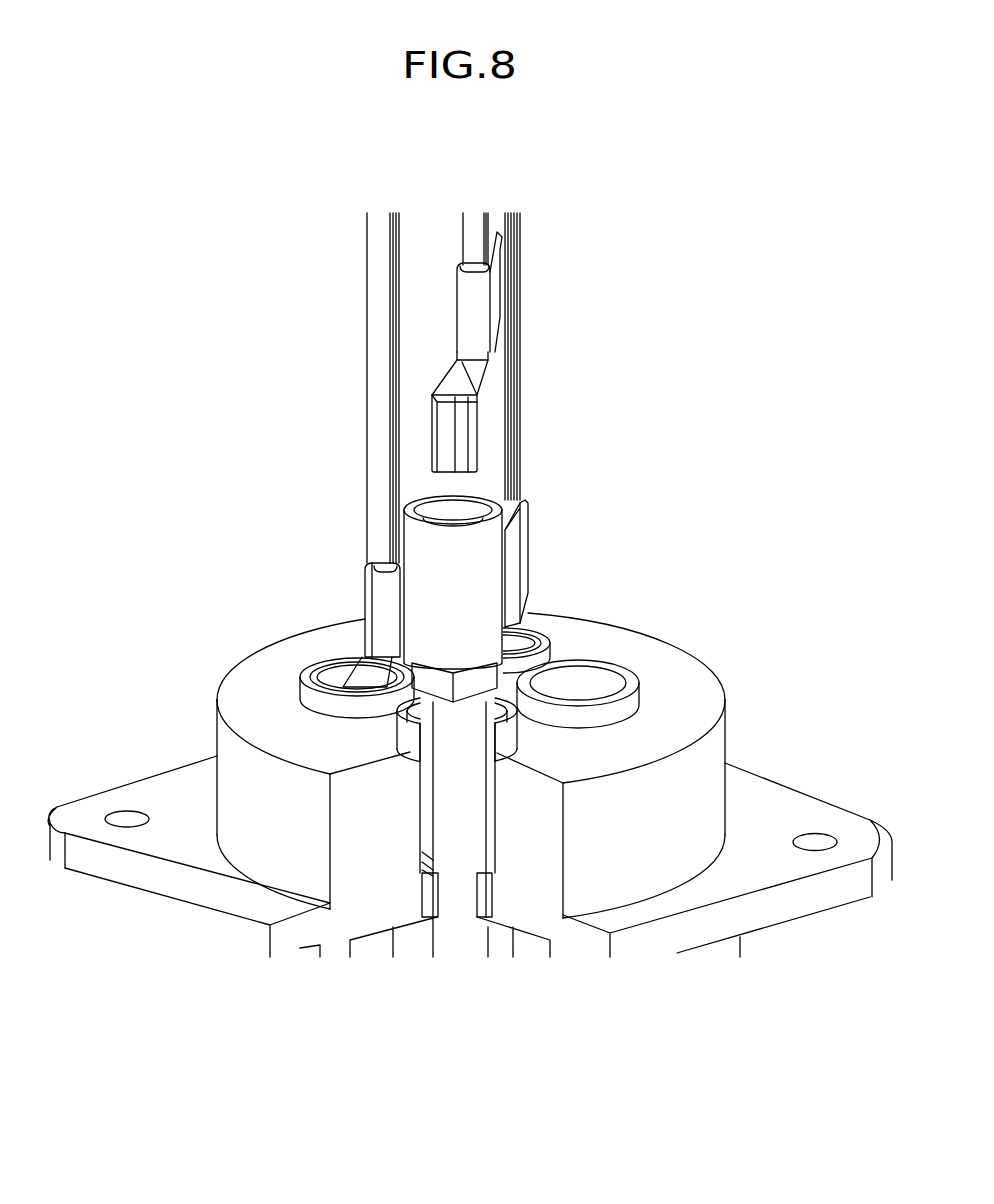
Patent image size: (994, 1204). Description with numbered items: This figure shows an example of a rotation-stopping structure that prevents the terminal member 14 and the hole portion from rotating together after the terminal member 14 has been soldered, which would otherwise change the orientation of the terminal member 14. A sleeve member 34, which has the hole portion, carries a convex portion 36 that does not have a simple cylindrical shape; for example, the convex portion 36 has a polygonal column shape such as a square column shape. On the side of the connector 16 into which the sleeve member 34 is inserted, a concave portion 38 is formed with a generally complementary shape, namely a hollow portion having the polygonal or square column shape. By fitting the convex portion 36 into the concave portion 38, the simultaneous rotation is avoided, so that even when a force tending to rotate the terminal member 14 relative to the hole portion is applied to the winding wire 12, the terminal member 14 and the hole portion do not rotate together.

The winding wire 12 is at (513, 213).
The terminal member 14 is at (505, 287).
The connector 16 is at (172, 793).
The sleeve member 34 is at (438, 548).
The convex portion 36 is at (520, 682).
The concave portion 38 is at (455, 883).